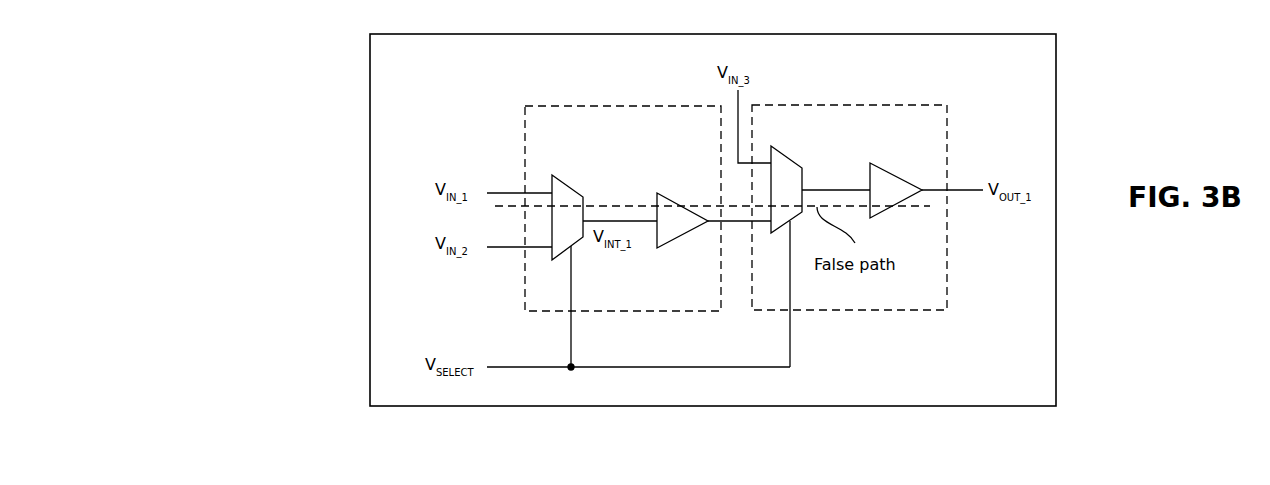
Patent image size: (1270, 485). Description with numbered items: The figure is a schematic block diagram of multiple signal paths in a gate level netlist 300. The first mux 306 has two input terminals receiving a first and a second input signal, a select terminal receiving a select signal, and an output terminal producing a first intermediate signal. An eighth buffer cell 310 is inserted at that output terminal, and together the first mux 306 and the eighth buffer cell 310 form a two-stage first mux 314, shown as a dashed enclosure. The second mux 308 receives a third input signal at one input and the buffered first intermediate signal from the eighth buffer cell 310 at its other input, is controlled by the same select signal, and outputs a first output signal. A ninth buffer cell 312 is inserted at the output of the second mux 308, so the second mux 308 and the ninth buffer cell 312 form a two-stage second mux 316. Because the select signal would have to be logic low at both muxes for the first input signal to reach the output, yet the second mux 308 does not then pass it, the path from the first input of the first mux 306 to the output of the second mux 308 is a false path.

The gate level netlist 300 is at (323, 195).
The first mux 306 is at (556, 176).
The second mux 308 is at (802, 169).
The eighth buffer cell 310 is at (657, 248).
The ninth buffer cell 312 is at (897, 175).
The two-stage first mux 314 is at (622, 105).
The two-stage second mux 316 is at (848, 105).